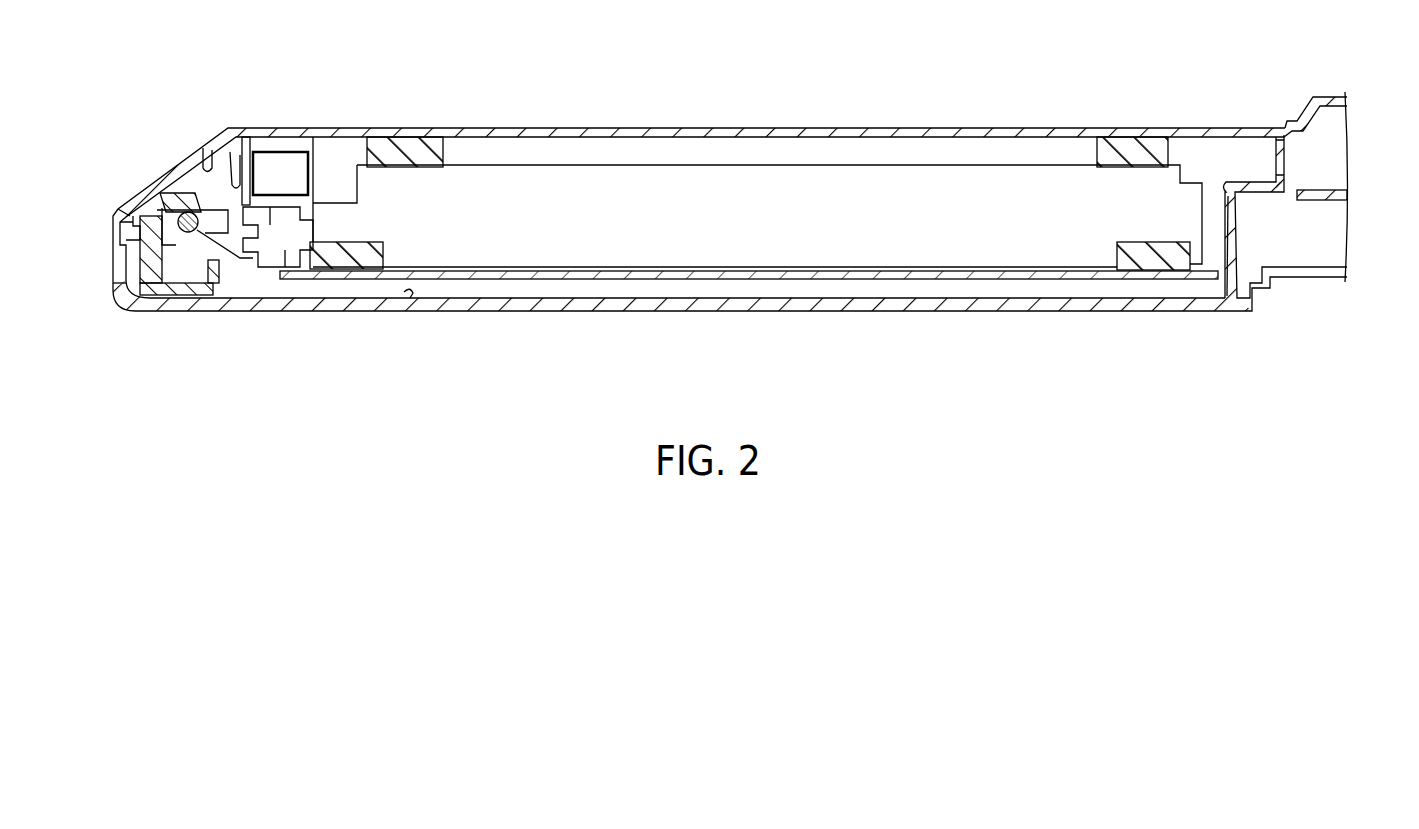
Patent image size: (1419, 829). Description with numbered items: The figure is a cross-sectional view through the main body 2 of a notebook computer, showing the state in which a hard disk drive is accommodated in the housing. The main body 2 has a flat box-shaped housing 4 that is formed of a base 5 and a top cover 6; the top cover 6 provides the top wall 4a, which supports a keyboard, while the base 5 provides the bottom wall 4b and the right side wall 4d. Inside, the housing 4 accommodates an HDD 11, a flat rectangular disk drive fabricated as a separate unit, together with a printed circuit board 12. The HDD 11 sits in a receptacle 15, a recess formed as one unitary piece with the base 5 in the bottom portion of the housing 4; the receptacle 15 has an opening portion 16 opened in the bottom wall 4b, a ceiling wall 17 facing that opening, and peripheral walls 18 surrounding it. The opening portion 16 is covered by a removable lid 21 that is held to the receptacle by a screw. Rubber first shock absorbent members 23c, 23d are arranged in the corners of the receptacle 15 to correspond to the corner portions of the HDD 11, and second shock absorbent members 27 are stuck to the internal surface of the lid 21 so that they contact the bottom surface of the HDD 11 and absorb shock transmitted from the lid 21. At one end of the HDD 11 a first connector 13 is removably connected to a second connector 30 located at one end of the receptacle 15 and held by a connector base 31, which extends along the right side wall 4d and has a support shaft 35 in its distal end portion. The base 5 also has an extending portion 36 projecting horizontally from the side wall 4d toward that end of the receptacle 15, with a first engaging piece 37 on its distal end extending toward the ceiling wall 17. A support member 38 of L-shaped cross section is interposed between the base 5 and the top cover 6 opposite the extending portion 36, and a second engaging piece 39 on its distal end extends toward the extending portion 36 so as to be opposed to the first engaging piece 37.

The main body 2 is at (721, 334).
The housing 4 is at (76, 220).
The top wall 4a is at (372, 306).
The bottom wall 4b is at (1325, 101).
The right side wall 4d is at (118, 218).
The base 5 is at (119, 224).
The top cover 6 is at (113, 250).
The HDD 11 is at (516, 210).
The printed circuit board 12 is at (1323, 194).
The first connector 13 is at (336, 213).
The receptacle 15 is at (962, 284).
The opening portion 16 is at (1275, 165).
The ceiling wall 17 is at (410, 297).
The peripheral walls 18 is at (1224, 232).
The lid 21 is at (276, 128).
The first shock absorbent member 23c is at (1156, 262).
The first shock absorbent member 23d is at (332, 258).
The second shock absorbent members 27 is at (382, 152).
The second connector 30 is at (293, 246).
The connector base 31 is at (207, 248).
The support shaft 35 is at (186, 233).
The extending portion 36 is at (194, 186).
The first engaging piece 37 is at (249, 137).
The support member 38 is at (141, 300).
The second engaging piece 39 is at (224, 284).